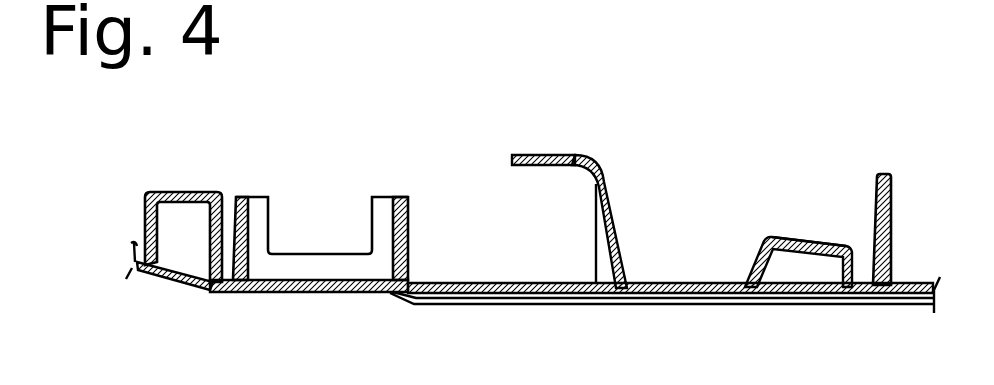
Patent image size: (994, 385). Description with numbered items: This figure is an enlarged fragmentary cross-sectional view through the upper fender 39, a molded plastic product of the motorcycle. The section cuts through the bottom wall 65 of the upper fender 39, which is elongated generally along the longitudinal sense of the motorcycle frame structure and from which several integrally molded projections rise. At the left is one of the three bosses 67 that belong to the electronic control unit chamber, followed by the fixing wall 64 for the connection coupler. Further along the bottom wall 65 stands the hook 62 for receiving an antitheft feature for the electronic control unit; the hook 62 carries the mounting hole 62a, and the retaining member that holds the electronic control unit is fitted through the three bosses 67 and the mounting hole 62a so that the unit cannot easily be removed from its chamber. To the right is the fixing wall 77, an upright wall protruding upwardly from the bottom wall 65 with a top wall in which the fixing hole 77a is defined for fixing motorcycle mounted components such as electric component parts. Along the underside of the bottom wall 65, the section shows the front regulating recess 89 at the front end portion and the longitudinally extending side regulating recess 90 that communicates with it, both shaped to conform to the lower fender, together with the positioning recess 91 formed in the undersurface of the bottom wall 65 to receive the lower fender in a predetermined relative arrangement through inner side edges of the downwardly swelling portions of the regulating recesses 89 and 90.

The upper fender 39 is at (734, 230).
The hook 62 is at (617, 200).
The mounting hole 62a is at (552, 153).
The fixing wall 64 is at (386, 208).
The bottom wall 65 is at (678, 305).
The boss 67 is at (145, 222).
The fixing wall 77 is at (750, 265).
The fixing hole 77a is at (815, 247).
The front regulating recess 89 is at (420, 302).
The side regulating recess 90 is at (798, 305).
The positioning recess 91 is at (458, 309).